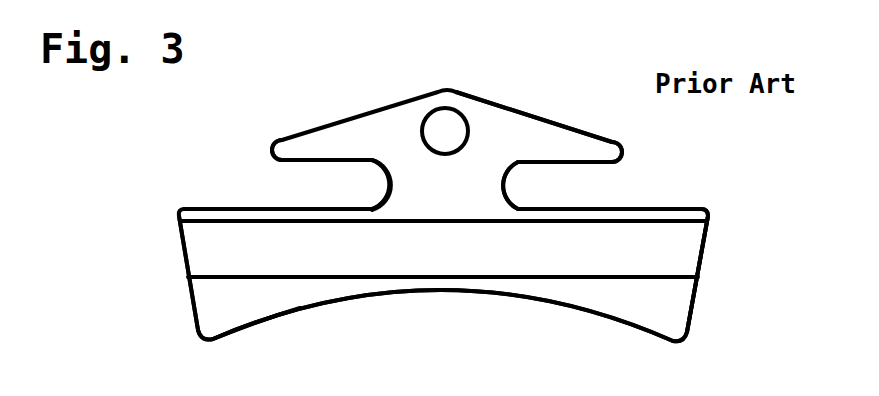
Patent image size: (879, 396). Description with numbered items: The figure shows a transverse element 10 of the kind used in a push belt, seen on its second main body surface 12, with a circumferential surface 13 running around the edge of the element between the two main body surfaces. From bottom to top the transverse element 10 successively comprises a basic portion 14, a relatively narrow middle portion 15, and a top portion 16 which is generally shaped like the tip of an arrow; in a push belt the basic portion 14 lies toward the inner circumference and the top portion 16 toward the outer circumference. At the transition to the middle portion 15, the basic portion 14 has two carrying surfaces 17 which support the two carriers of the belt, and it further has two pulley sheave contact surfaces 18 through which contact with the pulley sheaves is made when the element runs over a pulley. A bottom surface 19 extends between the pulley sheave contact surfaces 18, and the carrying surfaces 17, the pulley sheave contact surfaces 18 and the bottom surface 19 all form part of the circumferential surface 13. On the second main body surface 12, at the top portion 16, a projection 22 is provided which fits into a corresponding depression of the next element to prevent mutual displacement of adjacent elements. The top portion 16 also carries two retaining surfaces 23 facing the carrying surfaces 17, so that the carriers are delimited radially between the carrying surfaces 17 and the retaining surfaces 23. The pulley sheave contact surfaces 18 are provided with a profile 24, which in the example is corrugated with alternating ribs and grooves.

The transverse element 10 is at (488, 118).
The second main body surface 12 is at (665, 245).
The circumferential surface 13 is at (697, 307).
The basic portion 14 is at (685, 284).
The middle portion 15 is at (447, 187).
The top portion 16 is at (533, 130).
The carrying surfaces 17 is at (227, 207).
The pulley sheave contact surfaces 18 is at (187, 258).
The bottom surface 19 is at (613, 317).
The projection 22 is at (443, 130).
The retaining surfaces 23 is at (303, 163).
The profile 24 is at (192, 293).